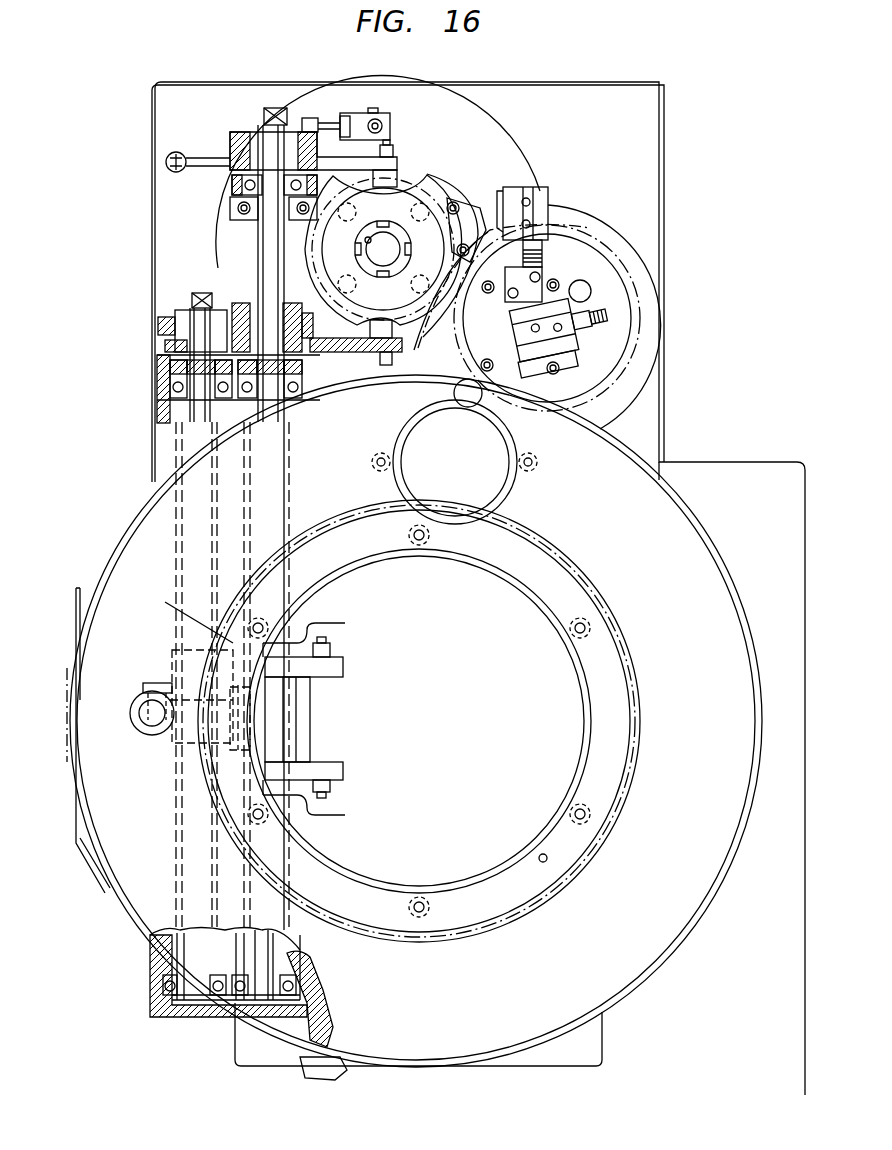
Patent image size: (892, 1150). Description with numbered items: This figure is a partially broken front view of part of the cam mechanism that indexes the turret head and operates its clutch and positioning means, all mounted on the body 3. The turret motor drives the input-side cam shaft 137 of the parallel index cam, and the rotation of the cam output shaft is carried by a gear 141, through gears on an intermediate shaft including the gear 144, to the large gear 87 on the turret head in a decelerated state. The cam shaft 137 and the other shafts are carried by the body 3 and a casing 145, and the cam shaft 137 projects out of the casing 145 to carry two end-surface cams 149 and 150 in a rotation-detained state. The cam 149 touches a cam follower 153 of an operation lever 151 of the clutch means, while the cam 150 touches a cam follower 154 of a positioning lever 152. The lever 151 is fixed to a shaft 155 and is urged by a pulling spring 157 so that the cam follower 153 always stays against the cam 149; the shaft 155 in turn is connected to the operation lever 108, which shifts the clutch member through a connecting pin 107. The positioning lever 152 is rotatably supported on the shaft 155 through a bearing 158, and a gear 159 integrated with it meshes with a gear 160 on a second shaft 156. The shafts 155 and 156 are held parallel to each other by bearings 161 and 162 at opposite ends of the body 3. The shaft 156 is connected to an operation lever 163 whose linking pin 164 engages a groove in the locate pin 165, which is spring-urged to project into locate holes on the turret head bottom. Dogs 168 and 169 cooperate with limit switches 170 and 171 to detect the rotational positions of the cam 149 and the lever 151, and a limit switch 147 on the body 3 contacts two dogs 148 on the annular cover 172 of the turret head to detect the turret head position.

The body 3 is at (740, 462).
The gear 87 is at (515, 566).
The connecting pin 107 is at (330, 790).
The operation lever 108 is at (345, 665).
The cam shaft 137 is at (368, 247).
The gear 141 is at (612, 395).
The gear 144 is at (505, 498).
The casing 145 is at (618, 222).
The limit switch 147 is at (576, 342).
The dogs 148 is at (545, 380).
The cam 149 is at (398, 196).
The cam 150 is at (460, 198).
The operation lever 151 is at (370, 158).
The positioning lever 152 is at (362, 370).
The cam follower 153 is at (395, 175).
The cam follower 154 is at (395, 330).
The shaft 155 is at (262, 242).
The shaft 156 is at (172, 362).
The pulling spring 157 is at (176, 152).
The bearing 158 is at (240, 303).
The gear 159 is at (322, 328).
The gear 160 is at (180, 310).
The bearings 161 is at (232, 186).
The bearings 162 is at (170, 385).
The operation lever 163 is at (172, 648).
The linking pin 164 is at (148, 682).
The locate pin 165 is at (150, 736).
The dog 168 is at (488, 210).
The dog 169 is at (310, 118).
The limit switch 170 is at (540, 188).
The limit switch 171 is at (362, 113).
The cover 172 is at (660, 458).